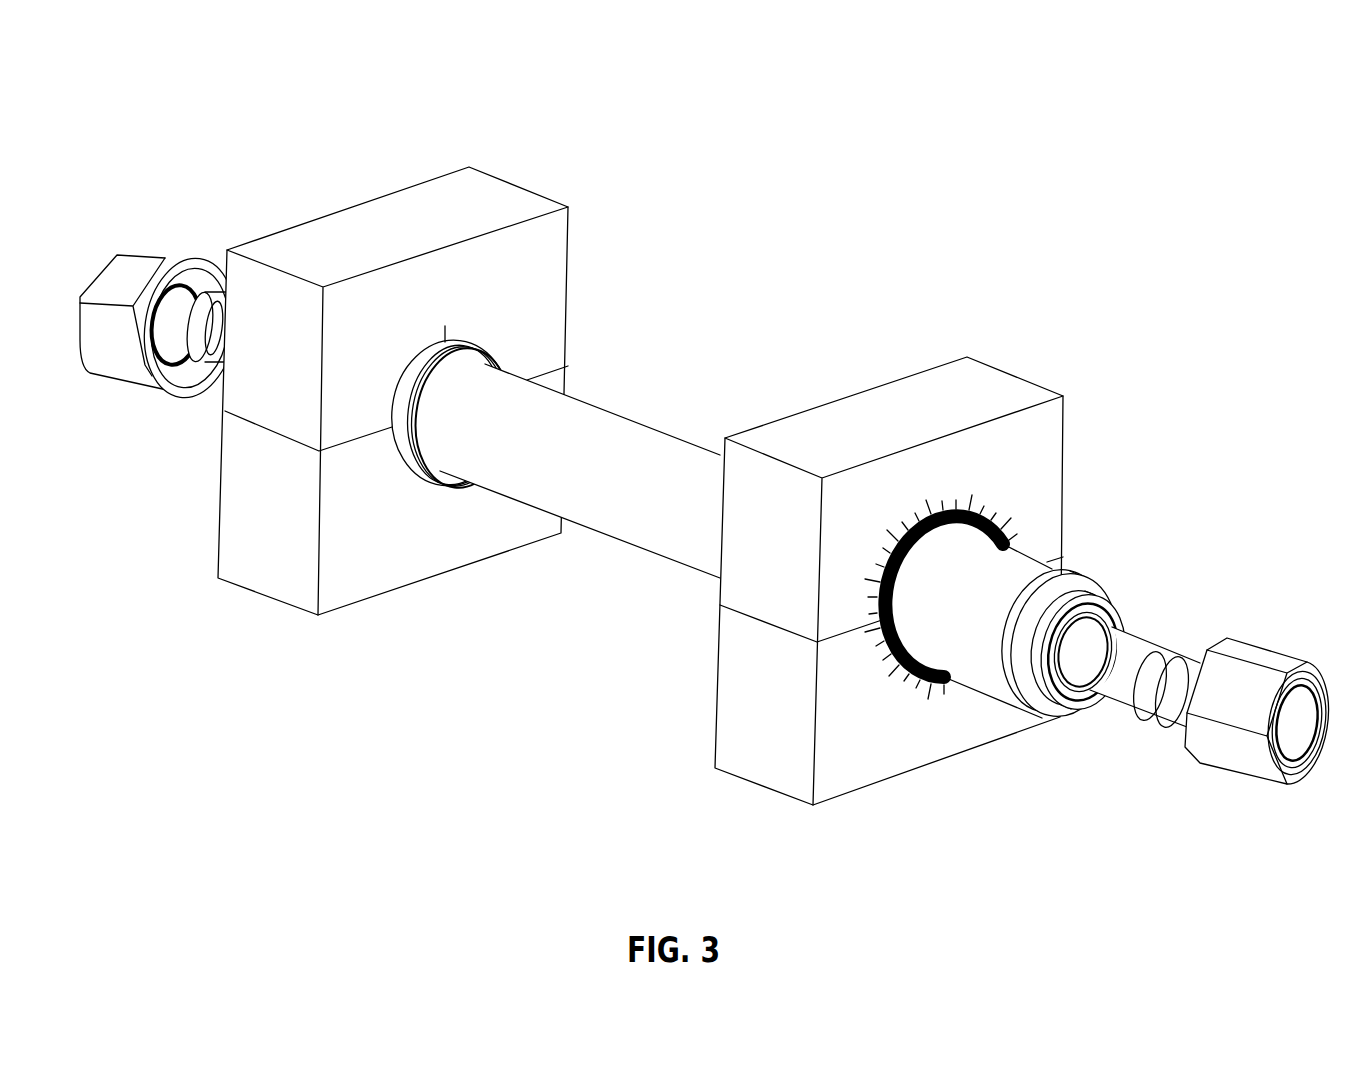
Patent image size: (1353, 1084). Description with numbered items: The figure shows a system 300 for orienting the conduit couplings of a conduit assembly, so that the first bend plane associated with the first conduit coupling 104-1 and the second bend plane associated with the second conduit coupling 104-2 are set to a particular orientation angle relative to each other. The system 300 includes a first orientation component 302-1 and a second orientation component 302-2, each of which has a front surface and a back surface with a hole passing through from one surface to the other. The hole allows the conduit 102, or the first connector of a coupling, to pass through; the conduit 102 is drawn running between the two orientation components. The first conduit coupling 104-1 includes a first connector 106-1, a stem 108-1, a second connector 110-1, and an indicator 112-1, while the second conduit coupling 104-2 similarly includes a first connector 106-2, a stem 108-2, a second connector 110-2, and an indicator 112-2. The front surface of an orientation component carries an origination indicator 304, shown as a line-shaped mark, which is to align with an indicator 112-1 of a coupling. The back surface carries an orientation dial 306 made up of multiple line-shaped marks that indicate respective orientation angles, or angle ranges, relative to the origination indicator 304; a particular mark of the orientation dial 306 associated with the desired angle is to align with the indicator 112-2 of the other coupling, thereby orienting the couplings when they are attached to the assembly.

The system 300 is at (182, 60).
The conduit 102 is at (681, 474).
The first conduit coupling 104-1 is at (175, 325).
The second conduit coupling 104-2 is at (1138, 670).
The first connector 106-1 is at (399, 476).
The first connector 106-2 is at (991, 664).
The stem 108-1 is at (175, 359).
The stem 108-2 is at (1107, 686).
The second connector 110-1 is at (106, 356).
The second connector 110-2 is at (1222, 757).
The indicator 112-1 is at (460, 388).
The indicator 112-2 is at (916, 594).
The first orientation component 302-1 is at (262, 579).
The second orientation component 302-2 is at (765, 740).
The origination indicator 304 is at (427, 327).
The orientation dial 306 is at (1003, 463).